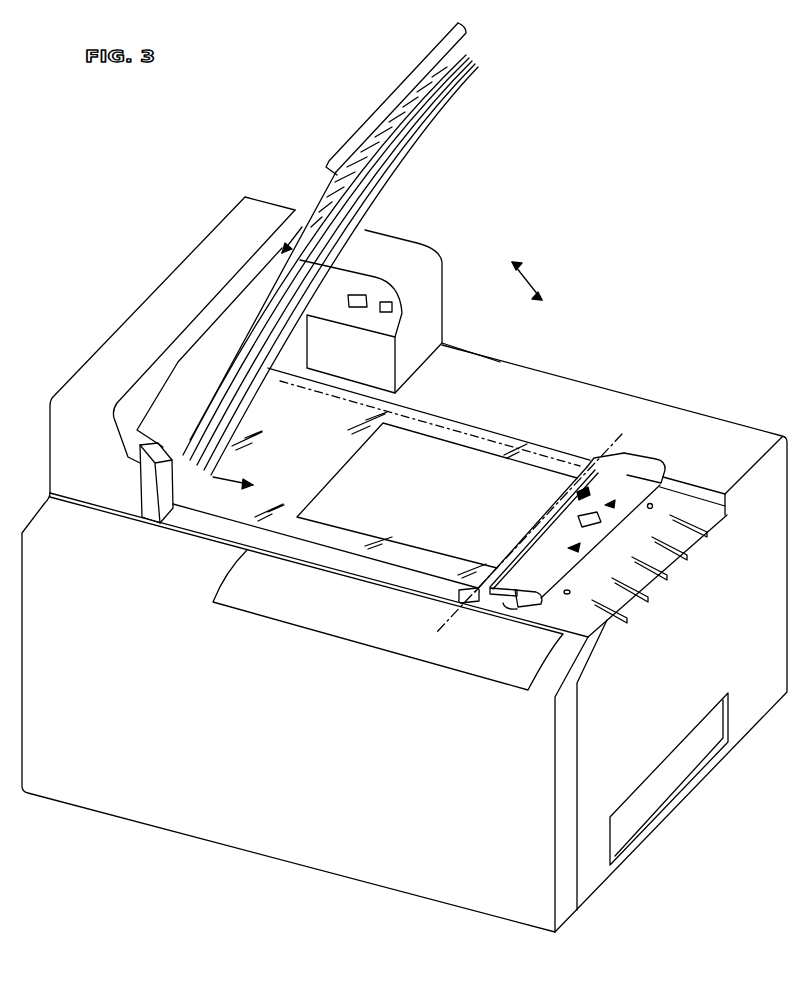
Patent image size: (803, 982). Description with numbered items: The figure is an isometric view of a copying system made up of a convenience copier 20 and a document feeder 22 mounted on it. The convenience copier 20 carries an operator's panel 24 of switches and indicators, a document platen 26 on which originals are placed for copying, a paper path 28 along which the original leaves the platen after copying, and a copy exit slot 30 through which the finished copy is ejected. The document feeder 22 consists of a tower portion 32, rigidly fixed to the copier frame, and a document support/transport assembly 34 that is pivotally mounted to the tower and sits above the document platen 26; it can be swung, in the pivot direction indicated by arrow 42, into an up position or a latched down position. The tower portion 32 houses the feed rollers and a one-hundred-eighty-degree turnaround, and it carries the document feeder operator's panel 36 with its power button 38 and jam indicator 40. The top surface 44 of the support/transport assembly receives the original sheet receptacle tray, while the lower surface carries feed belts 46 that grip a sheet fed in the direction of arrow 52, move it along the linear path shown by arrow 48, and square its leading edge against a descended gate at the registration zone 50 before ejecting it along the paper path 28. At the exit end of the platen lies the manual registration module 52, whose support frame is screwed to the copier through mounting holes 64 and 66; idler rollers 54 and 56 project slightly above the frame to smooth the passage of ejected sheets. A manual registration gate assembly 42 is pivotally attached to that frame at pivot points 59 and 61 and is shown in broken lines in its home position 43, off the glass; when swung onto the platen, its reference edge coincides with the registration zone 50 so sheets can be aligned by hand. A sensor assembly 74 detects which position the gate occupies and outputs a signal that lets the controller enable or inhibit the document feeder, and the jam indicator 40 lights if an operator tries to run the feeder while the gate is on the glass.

The convenience copier 20 is at (262, 858).
The document feeder 22 is at (92, 347).
The operator's panel 24 is at (353, 632).
The document platen 26 is at (240, 508).
The paper path 28 is at (687, 477).
The copy exit slot 30 is at (653, 798).
The tower portion 32 is at (153, 307).
The document support/transport assembly 34 is at (317, 202).
The document feeder operator's panel 36 is at (385, 322).
The power button 38 is at (385, 303).
The jam indicator 40 is at (360, 295).
The manual registration gate assembly 42 is at (589, 467).
The home position 43 is at (650, 456).
The top surface 44 is at (268, 247).
The feed belts 46 is at (392, 188).
The arrow 48 is at (233, 475).
The registration zone 50 is at (622, 434).
The manual registration module 52 is at (293, 233).
The idler roller 54 is at (573, 550).
The idler roller 56 is at (618, 498).
The pivot point 59 is at (527, 550).
The pivot point 61 is at (581, 496).
The mounting hole 64 is at (571, 592).
The mounting hole 66 is at (651, 509).
The sensor assembly 74 is at (382, 153).